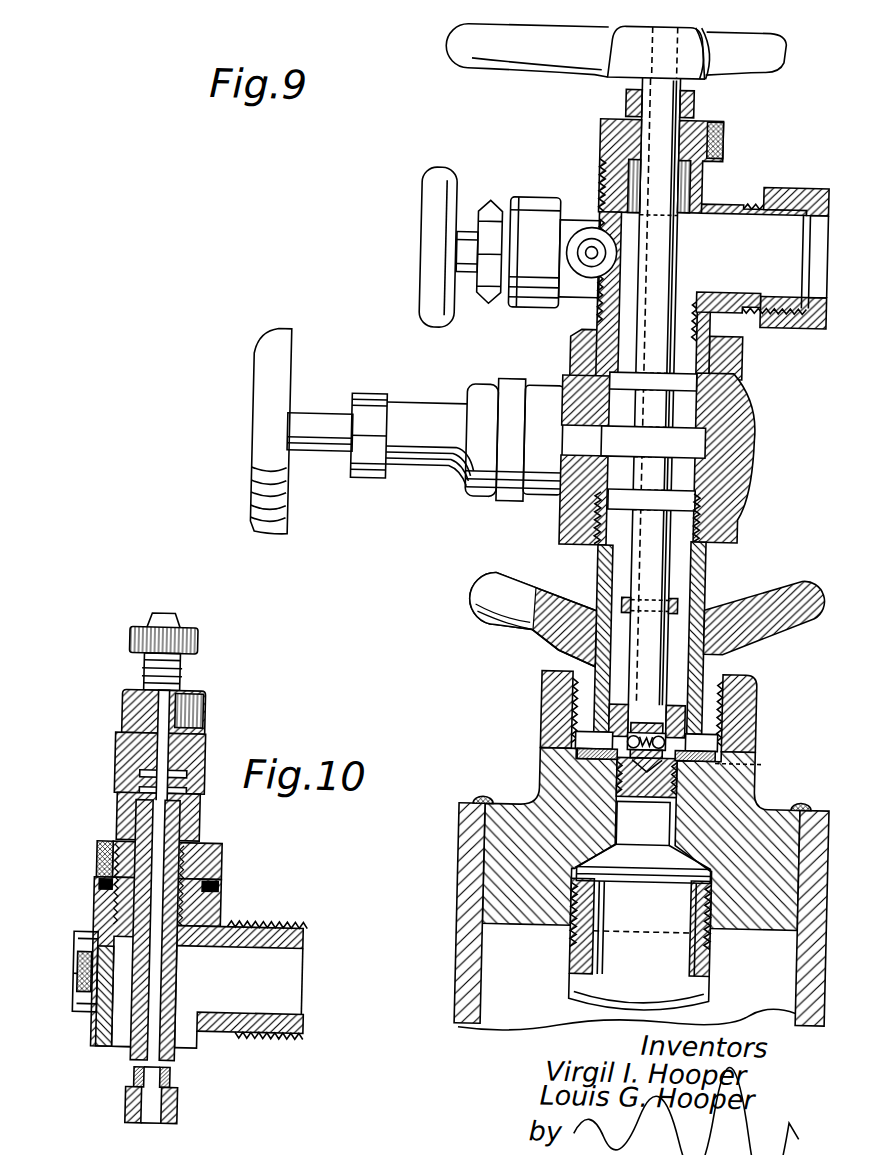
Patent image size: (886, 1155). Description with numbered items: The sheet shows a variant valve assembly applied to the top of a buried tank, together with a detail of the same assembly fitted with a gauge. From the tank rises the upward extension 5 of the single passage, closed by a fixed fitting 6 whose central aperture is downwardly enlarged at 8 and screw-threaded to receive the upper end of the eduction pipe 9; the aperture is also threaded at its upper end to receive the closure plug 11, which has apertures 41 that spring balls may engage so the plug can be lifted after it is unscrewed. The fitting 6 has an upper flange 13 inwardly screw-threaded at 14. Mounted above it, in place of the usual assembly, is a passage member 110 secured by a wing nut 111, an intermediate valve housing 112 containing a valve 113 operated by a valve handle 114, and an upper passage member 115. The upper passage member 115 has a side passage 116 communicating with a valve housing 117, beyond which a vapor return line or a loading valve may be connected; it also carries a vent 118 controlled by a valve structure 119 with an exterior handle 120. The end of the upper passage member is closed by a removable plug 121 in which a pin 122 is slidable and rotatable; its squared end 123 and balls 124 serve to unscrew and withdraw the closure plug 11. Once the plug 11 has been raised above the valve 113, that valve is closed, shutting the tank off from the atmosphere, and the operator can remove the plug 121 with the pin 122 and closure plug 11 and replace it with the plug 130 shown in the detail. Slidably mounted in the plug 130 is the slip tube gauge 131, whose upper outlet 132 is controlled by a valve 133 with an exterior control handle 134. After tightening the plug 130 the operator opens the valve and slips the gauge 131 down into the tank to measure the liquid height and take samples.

In FIG. 9, the upward extension 5 is at (473, 966).
In FIG. 9, the fixed fitting 6 is at (527, 816).
In FIG. 9, the downwardly enlarged aperture portion 8 is at (593, 925).
In FIG. 9, the eduction pipe 9 is at (713, 961).
In FIG. 9, the closure plug 11 is at (655, 787).
In FIG. 9, the upper flange 13 is at (557, 685).
In FIG. 9, the screw threads 14 is at (577, 699).
In FIG. 9, the apertures 41 is at (582, 745).
In FIG. 9, the passage member 110 is at (705, 576).
In FIG. 9, the wing nut 111 is at (720, 641).
In FIG. 9, the intermediate valve housing 112 is at (731, 450).
In FIG. 9, the valve 113 is at (579, 445).
In FIG. 9, the valve handle 114 is at (255, 401).
In FIG. 9, the upper passage member 115 is at (713, 317).
In FIG. 10, the upper passage member 115 is at (202, 1039).
In FIG. 9, the side passage 116 is at (742, 203).
In FIG. 10, the side passage 116 is at (229, 929).
In FIG. 9, the valve housing 117 is at (800, 194).
In FIG. 9, the vent 118 is at (604, 248).
In FIG. 10, the vent 118 is at (111, 985).
In FIG. 9, the valve structure 119 is at (587, 262).
In FIG. 10, the valve structure 119 is at (80, 974).
In FIG. 9, the exterior handle 120 is at (427, 245).
In FIG. 9, the removable plug 121 is at (616, 184).
In FIG. 9, the pin 122 is at (655, 257).
In FIG. 9, the squared end 123 is at (658, 715).
In FIG. 9, the balls 124 is at (706, 746).
In FIG. 10, the plug 130 is at (207, 861).
In FIG. 10, the slip tube gauge 131 is at (138, 1070).
In FIG. 10, the upper outlet 132 is at (200, 715).
In FIG. 10, the valve 133 is at (154, 697).
In FIG. 10, the exterior control handle 134 is at (155, 634).